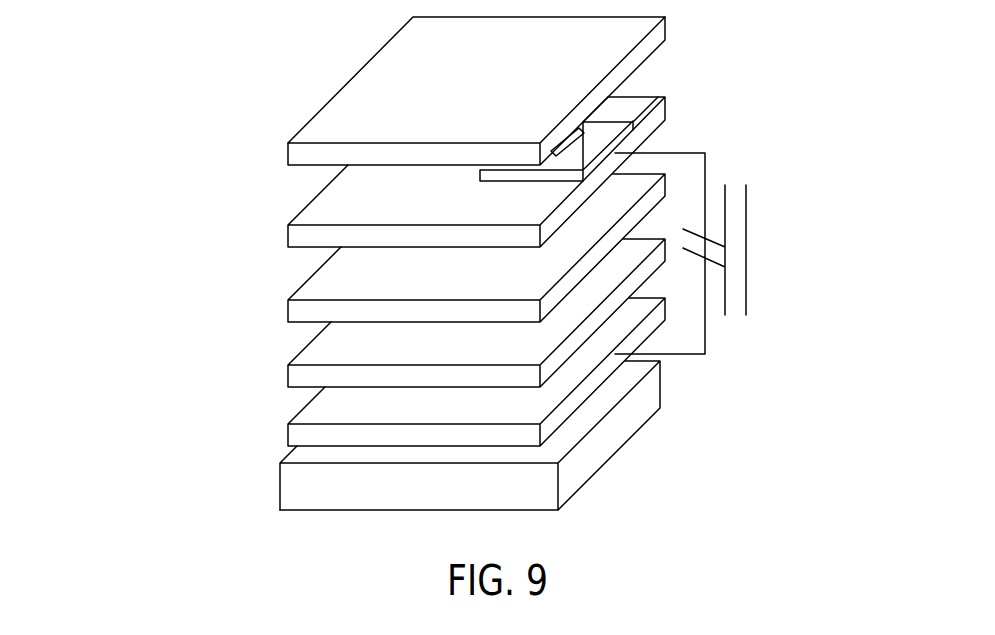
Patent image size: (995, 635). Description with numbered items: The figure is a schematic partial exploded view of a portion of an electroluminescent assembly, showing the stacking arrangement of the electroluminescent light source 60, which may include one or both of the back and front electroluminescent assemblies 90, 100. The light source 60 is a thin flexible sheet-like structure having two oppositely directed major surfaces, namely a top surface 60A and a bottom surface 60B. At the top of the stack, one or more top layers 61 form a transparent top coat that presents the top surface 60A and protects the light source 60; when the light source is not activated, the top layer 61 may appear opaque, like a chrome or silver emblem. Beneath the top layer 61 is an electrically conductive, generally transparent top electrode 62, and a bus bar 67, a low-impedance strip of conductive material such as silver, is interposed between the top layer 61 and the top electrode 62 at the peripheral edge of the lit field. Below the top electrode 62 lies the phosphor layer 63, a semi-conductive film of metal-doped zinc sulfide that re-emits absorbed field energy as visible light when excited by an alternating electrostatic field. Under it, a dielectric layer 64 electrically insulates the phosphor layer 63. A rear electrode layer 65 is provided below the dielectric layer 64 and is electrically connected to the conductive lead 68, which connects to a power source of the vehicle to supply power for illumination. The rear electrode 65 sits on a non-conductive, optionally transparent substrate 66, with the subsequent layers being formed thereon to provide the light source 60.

The electroluminescent light source 60 is at (225, 138).
The back electroluminescent assembly 90 is at (460, 309).
The front electroluminescent assembly 100 is at (481, 309).
The top surface 60A is at (393, 77).
The bottom surface 60B is at (362, 510).
The top layer 61 is at (318, 160).
The top electrode 62 is at (310, 240).
The phosphor layer 63 is at (308, 318).
The dielectric layer 64 is at (307, 378).
The rear electrode layer 65 is at (287, 437).
The substrate 66 is at (280, 488).
The bus bar 67 is at (611, 126).
The conductive lead 68 is at (735, 257).